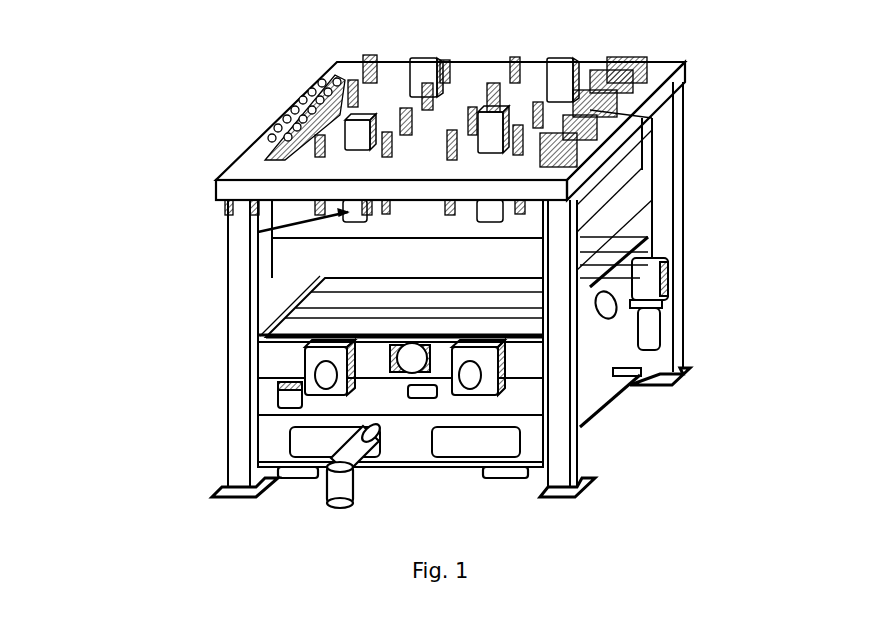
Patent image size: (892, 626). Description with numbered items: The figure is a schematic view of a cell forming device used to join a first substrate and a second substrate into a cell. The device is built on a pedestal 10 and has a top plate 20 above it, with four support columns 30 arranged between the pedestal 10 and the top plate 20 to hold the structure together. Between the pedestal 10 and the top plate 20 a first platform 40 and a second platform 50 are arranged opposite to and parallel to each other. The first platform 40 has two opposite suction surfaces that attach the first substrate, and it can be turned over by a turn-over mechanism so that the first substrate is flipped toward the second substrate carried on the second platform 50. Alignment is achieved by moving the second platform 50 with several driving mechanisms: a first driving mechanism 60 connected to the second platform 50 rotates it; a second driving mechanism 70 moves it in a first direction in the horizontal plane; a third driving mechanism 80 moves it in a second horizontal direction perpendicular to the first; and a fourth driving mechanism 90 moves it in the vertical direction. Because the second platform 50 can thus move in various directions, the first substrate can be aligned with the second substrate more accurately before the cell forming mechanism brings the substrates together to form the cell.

The pedestal 10 is at (275, 443).
The top plate 20 is at (250, 168).
The support columns 30 is at (236, 258).
The first platform 40 is at (296, 260).
The second platform 50 is at (290, 362).
The first driving mechanism 60 is at (347, 388).
The second driving mechanism 70 is at (492, 378).
The third driving mechanism 80 is at (650, 280).
The fourth driving mechanism 90 is at (292, 397).